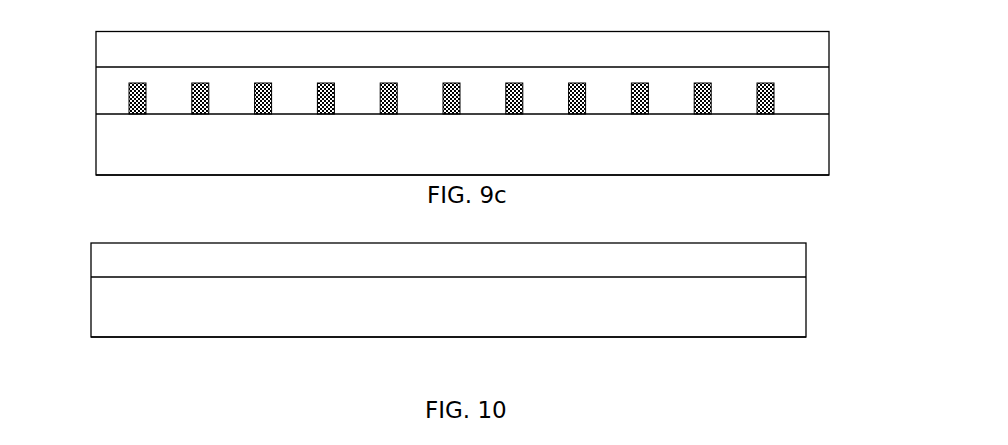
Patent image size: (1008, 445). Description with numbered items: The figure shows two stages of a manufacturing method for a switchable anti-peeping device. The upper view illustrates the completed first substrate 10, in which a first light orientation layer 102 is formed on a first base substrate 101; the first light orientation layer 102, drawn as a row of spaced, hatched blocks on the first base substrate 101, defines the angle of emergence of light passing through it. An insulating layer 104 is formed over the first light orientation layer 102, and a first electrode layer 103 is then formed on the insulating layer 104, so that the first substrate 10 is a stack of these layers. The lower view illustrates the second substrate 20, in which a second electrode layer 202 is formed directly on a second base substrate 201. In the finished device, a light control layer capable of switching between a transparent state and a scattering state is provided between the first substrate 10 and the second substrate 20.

In FIG. 9c, the first substrate 10 is at (79, 31).
In FIG. 9c, the first base substrate 101 is at (818, 149).
In FIG. 9c, the first light orientation layer 102 is at (774, 99).
In FIG. 9c, the first electrode layer 103 is at (862, 30).
In FIG. 9c, the insulating layer 104 is at (867, 67).
In FIG. 10, the second substrate 20 is at (73, 248).
In FIG. 10, the second base substrate 201 is at (860, 367).
In FIG. 10, the second electrode layer 202 is at (860, 337).